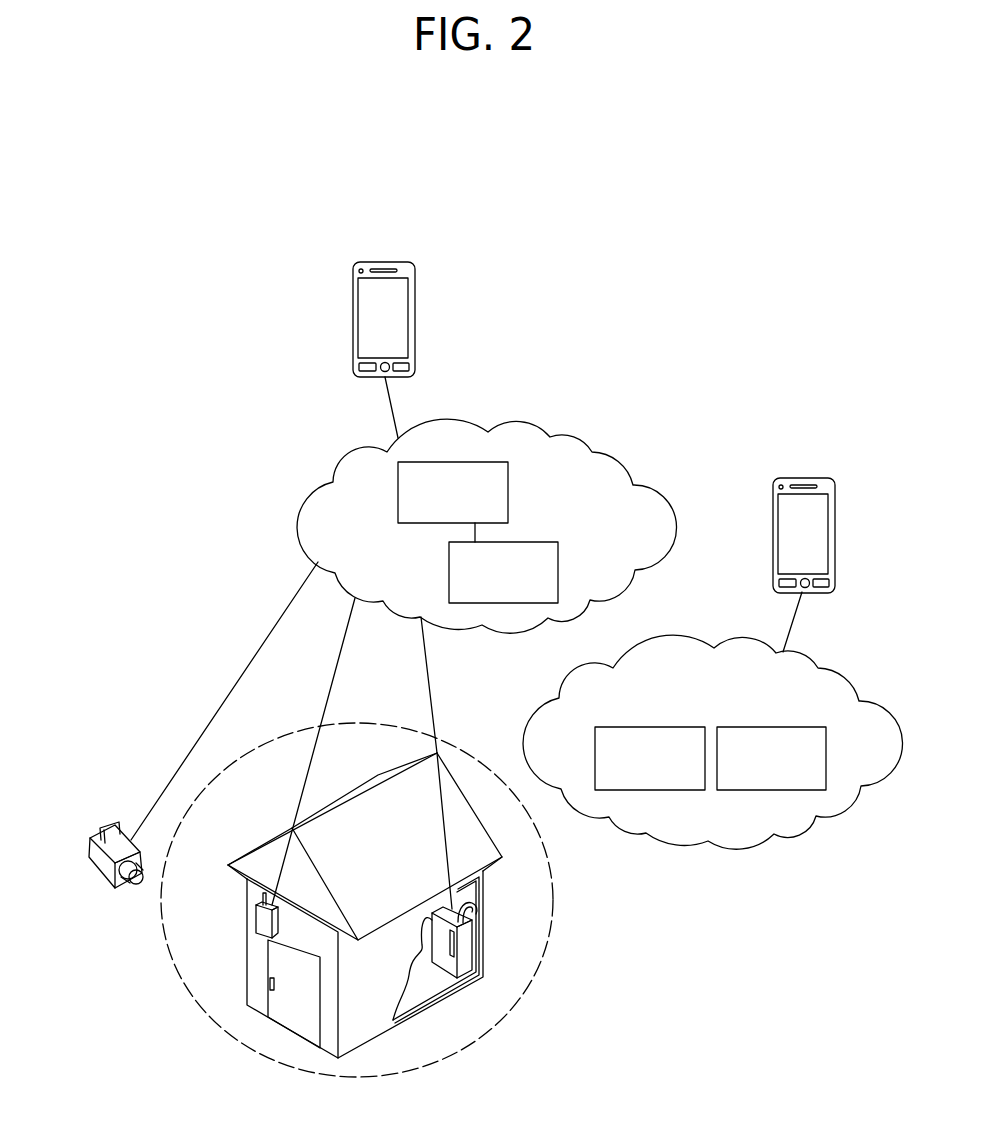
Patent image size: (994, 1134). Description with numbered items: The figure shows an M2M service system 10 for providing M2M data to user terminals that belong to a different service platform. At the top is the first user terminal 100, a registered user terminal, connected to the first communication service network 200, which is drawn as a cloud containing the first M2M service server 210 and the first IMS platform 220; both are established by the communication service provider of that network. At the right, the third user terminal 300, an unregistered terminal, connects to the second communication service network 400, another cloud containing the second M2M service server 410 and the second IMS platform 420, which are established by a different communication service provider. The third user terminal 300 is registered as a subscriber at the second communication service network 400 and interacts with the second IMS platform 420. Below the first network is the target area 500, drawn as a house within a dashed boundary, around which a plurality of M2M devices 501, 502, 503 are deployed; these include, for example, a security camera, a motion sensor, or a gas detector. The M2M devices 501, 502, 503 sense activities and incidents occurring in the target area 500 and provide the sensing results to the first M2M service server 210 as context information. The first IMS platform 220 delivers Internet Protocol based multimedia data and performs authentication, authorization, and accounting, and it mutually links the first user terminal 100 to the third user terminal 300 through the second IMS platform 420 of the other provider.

The M2M service system 10 is at (221, 383).
The first user terminal 100 is at (381, 263).
The first communication service network 200 is at (516, 423).
The first M2M service server 210 is at (463, 462).
The first IMS platform 220 is at (512, 541).
The third user terminal 300 is at (806, 478).
The second communication service network 400 is at (840, 669).
The second M2M service server 410 is at (660, 727).
The second IMS platform 420 is at (782, 727).
The target area 500 is at (440, 737).
The M2M device 501 is at (90, 843).
The M2M device 502 is at (257, 918).
The M2M device 503 is at (472, 947).